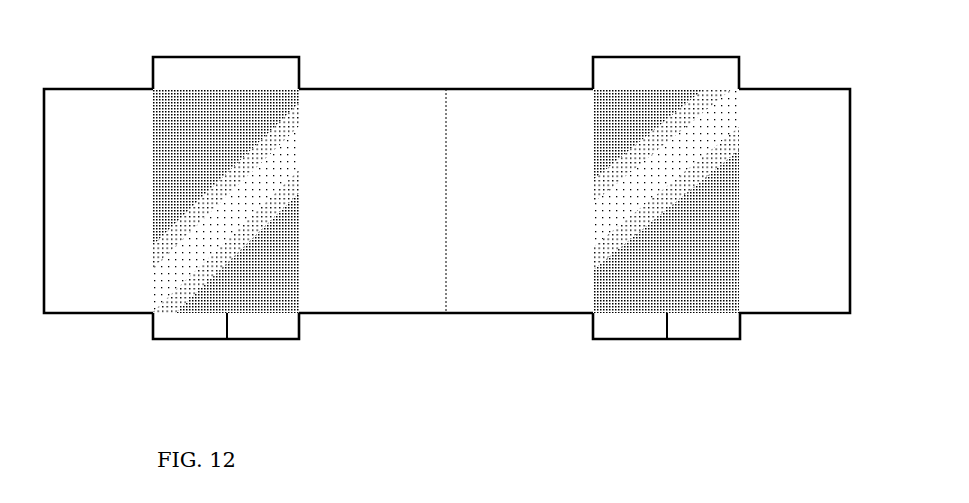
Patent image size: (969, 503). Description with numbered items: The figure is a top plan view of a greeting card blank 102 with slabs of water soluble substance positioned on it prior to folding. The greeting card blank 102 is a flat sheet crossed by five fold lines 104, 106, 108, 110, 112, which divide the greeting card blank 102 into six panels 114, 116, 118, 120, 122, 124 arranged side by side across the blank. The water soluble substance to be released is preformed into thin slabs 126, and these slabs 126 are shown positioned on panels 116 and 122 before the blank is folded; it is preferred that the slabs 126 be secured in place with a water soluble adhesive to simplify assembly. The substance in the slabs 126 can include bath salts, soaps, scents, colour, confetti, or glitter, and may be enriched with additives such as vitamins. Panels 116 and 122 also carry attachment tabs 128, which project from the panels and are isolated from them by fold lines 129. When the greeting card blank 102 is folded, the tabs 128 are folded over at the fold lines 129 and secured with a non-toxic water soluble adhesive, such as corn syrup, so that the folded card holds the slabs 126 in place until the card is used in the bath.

The greeting card blank 102 is at (434, 63).
The fold line 104 is at (152, 285).
The fold line 106 is at (300, 287).
The fold line 108 is at (450, 286).
The fold line 110 is at (593, 288).
The fold line 112 is at (742, 280).
The panel 114 is at (76, 211).
The panel 116 is at (227, 339).
The panel 118 is at (358, 211).
The panel 120 is at (505, 211).
The panel 122 is at (667, 339).
The panel 124 is at (784, 211).
The slab 126 is at (195, 162).
The attachment tab 128 is at (214, 81).
The fold line 129 is at (172, 88).